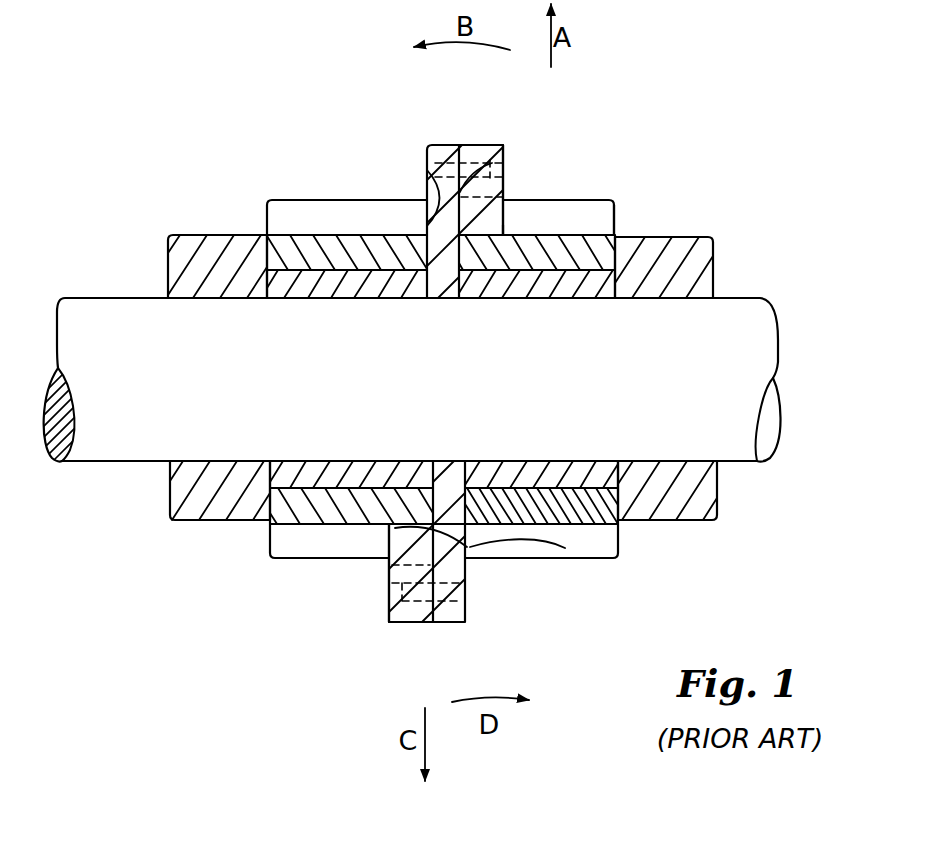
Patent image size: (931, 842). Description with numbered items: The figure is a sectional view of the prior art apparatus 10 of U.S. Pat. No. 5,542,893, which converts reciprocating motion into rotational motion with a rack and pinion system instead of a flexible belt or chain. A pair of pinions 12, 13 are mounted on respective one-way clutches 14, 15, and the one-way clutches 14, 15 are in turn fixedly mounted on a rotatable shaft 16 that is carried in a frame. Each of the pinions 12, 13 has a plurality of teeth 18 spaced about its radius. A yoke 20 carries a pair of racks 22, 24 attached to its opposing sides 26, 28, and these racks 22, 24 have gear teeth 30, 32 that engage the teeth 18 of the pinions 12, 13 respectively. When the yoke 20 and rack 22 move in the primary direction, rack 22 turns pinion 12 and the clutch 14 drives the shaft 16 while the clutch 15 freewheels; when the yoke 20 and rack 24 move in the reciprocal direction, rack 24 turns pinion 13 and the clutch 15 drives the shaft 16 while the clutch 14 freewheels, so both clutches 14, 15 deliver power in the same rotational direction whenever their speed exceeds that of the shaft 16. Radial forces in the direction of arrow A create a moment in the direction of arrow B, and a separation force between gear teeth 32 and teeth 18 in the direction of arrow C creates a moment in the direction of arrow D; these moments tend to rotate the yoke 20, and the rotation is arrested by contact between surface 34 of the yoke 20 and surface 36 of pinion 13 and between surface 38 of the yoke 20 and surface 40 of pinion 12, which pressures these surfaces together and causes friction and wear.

The apparatus 10 is at (586, 106).
The pinion 12 is at (618, 228).
The pinion 13 is at (266, 227).
The one-way clutch 14 is at (621, 279).
The one-way clutch 15 is at (266, 284).
The rotatable shaft 16 is at (736, 298).
The teeth 18 is at (317, 199).
The yoke 20 is at (440, 144).
The rack 22 is at (487, 144).
The rack 24 is at (403, 623).
The side of the yoke 26 is at (482, 172).
The side of the yoke 28 is at (430, 580).
The gear teeth 30 is at (506, 216).
The gear teeth 32 is at (387, 541).
The surface of the yoke 34 is at (426, 205).
The surface of the pinion 36 is at (428, 170).
The surface of the yoke 38 is at (565, 548).
The surface of the pinion 40 is at (395, 528).